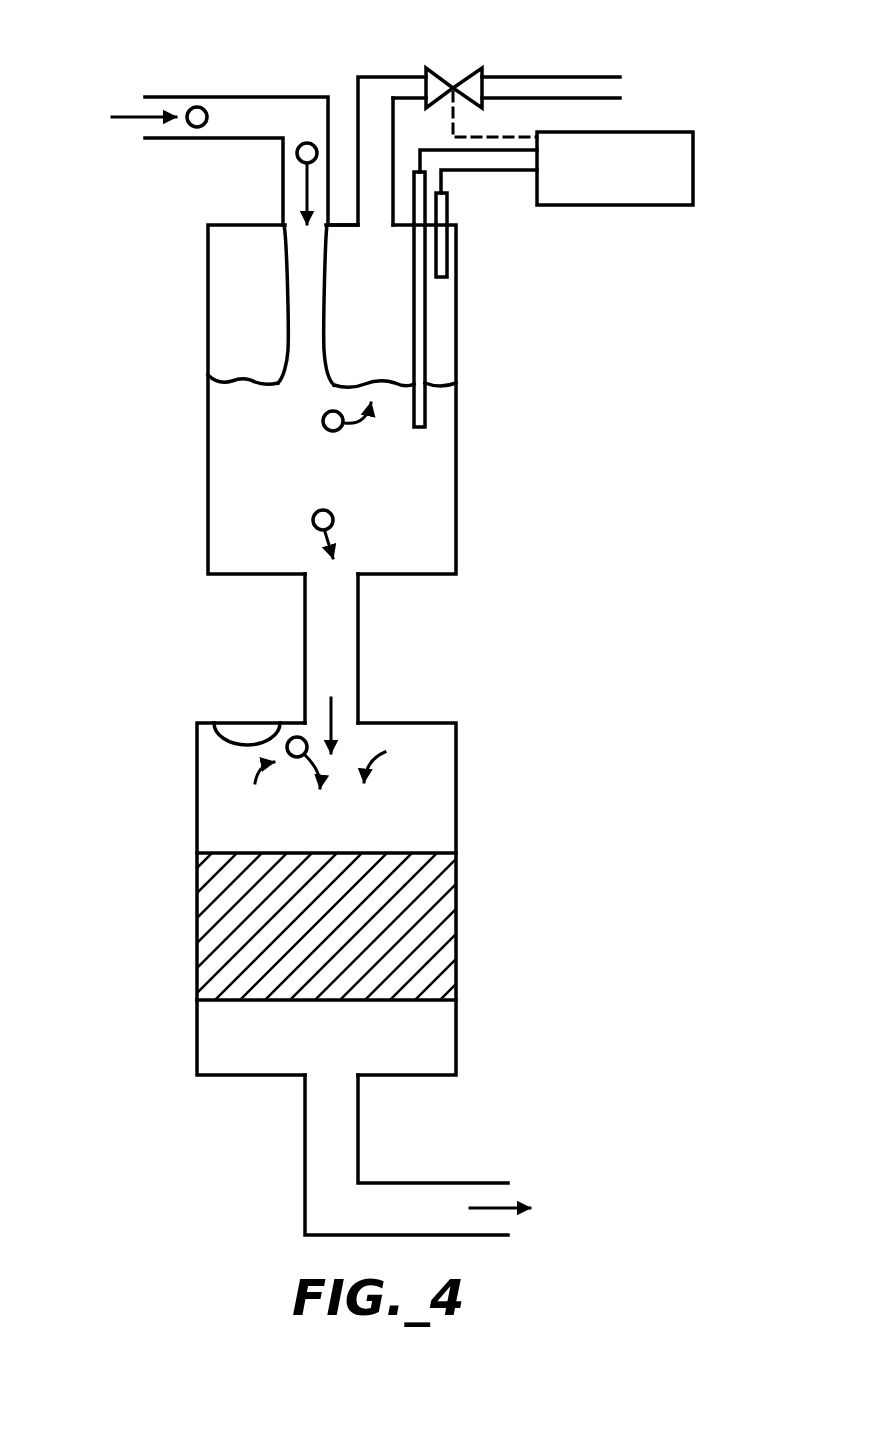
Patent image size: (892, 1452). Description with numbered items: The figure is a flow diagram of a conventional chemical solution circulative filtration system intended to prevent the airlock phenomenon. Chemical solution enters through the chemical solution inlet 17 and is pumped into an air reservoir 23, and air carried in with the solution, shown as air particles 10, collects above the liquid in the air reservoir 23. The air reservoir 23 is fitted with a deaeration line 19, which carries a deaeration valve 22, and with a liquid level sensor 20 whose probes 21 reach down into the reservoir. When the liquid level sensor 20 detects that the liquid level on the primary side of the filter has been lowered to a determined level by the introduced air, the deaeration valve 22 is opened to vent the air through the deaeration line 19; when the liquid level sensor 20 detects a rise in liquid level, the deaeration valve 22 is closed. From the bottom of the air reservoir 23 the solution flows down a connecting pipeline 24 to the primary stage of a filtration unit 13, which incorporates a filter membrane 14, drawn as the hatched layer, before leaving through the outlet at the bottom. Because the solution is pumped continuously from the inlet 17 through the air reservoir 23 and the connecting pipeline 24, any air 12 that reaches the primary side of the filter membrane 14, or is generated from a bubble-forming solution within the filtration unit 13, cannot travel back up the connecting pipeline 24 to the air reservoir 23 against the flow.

The air particles 10 is at (196, 128).
The chemical solution inlet 17 is at (228, 96).
The deaeration valve 22 is at (437, 70).
The deaeration line 19 is at (540, 76).
The liquid level sensor 20 is at (617, 207).
The level sensing probes 21 is at (437, 441).
The air reservoir 23 is at (457, 515).
The connecting pipeline 24 is at (360, 633).
The air 12 is at (297, 736).
The filtration unit 13 is at (457, 783).
The filter membrane 14 is at (442, 922).